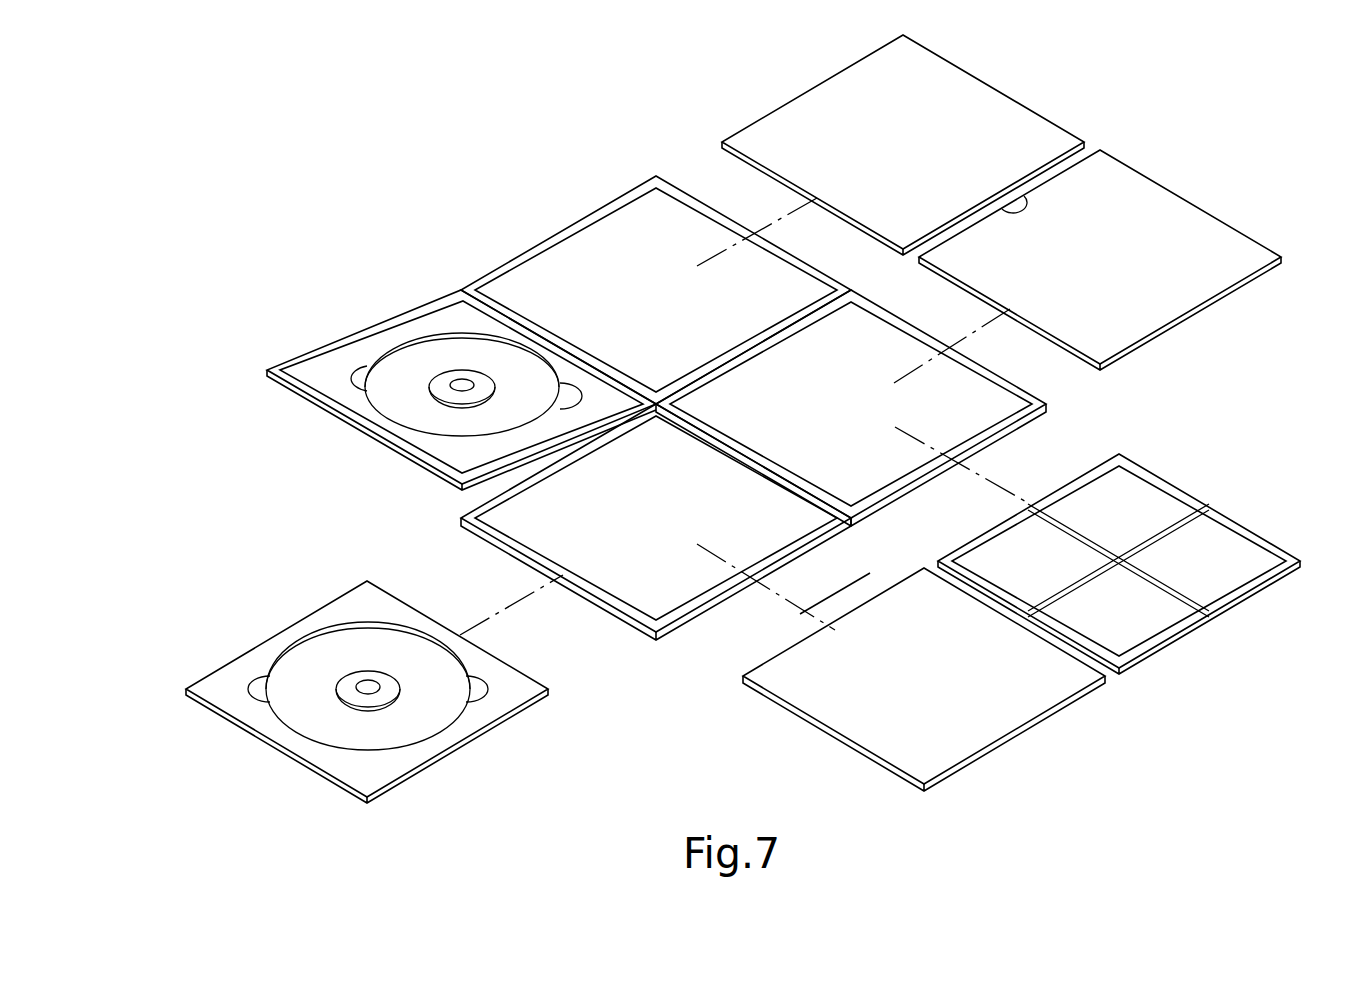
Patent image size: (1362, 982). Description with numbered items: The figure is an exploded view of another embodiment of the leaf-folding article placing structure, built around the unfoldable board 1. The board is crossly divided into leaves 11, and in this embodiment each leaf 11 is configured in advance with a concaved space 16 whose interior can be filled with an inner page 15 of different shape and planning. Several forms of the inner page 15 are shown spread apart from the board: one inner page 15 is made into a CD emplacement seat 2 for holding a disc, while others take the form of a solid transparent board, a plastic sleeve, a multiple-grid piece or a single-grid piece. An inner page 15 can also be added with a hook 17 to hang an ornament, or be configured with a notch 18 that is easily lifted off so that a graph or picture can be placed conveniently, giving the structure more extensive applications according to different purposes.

The unfoldable board 1 is at (398, 240).
The CD emplacement seat 2 is at (343, 683).
The leaf 11 is at (327, 343).
The inner page 15 is at (818, 108).
The concaved space 16 is at (611, 264).
The hook 17 is at (848, 633).
The notch 18 is at (1022, 207).